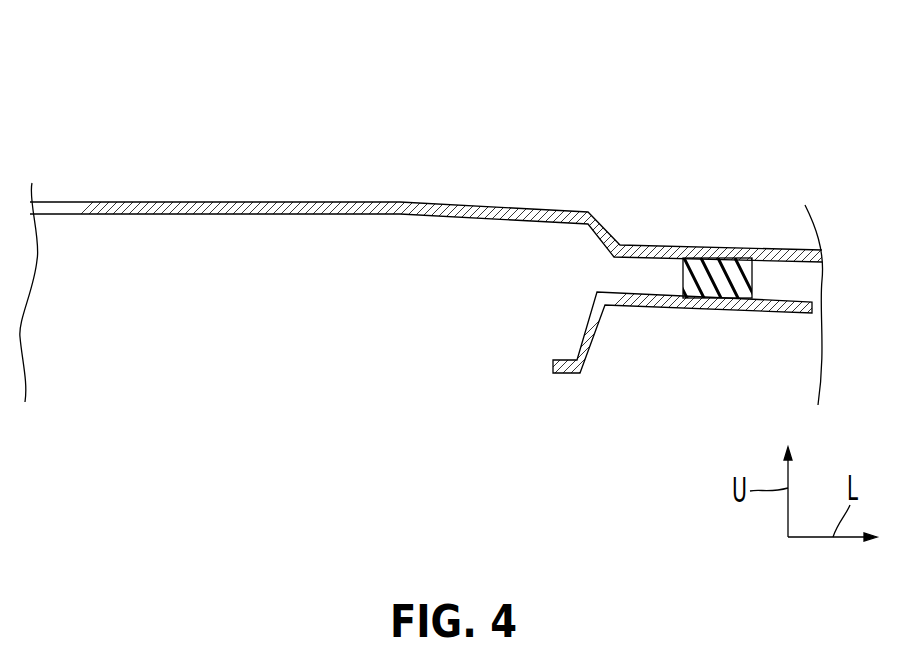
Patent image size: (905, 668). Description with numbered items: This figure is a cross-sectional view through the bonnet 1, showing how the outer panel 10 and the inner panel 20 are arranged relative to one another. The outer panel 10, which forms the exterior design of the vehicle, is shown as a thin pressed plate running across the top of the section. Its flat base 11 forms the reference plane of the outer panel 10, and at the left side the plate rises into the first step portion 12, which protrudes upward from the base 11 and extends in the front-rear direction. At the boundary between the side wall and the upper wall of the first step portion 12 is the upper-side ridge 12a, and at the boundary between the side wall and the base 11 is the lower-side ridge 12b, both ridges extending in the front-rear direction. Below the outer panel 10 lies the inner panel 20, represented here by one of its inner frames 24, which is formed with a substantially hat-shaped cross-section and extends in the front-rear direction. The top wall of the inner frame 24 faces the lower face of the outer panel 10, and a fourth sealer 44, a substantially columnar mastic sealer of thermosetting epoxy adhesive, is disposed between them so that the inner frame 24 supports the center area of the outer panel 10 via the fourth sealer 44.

The bonnet 1 is at (543, 100).
The bonnet outer panel 10 is at (306, 203).
The first step portion 12 is at (240, 202).
The upper-side ridge 12a is at (590, 210).
The lower-side ridge 12b is at (621, 244).
The base 11 is at (770, 246).
The bonnet inner panel 20 is at (722, 353).
The inner frame 24 is at (593, 335).
The fourth sealer 44 is at (720, 305).